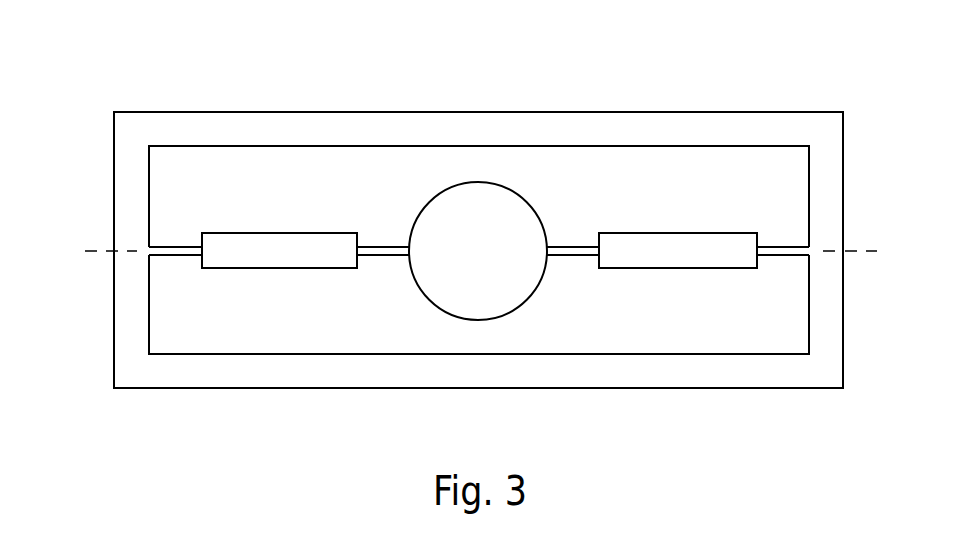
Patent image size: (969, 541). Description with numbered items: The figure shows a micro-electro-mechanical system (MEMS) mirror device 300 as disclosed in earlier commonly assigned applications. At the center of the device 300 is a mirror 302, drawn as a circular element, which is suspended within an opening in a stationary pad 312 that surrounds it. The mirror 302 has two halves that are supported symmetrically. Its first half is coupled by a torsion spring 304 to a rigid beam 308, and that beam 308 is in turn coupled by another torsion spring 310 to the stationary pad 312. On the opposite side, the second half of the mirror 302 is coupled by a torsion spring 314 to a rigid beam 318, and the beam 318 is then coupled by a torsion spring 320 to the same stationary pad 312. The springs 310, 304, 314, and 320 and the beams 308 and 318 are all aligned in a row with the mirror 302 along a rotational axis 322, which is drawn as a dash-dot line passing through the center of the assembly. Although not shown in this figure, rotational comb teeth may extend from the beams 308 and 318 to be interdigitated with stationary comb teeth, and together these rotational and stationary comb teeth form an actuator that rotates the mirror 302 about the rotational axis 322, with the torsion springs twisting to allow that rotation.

The MEMS mirror device 300 is at (97, 96).
The mirror 302 is at (494, 262).
The torsion spring 304 is at (391, 246).
The rigid beam 308 is at (295, 262).
The torsion spring 310 is at (176, 246).
The stationary pad 312 is at (123, 364).
The torsion spring 314 is at (579, 246).
The rigid beam 318 is at (693, 262).
The torsion spring 320 is at (791, 246).
The rotational axis 322 is at (860, 250).